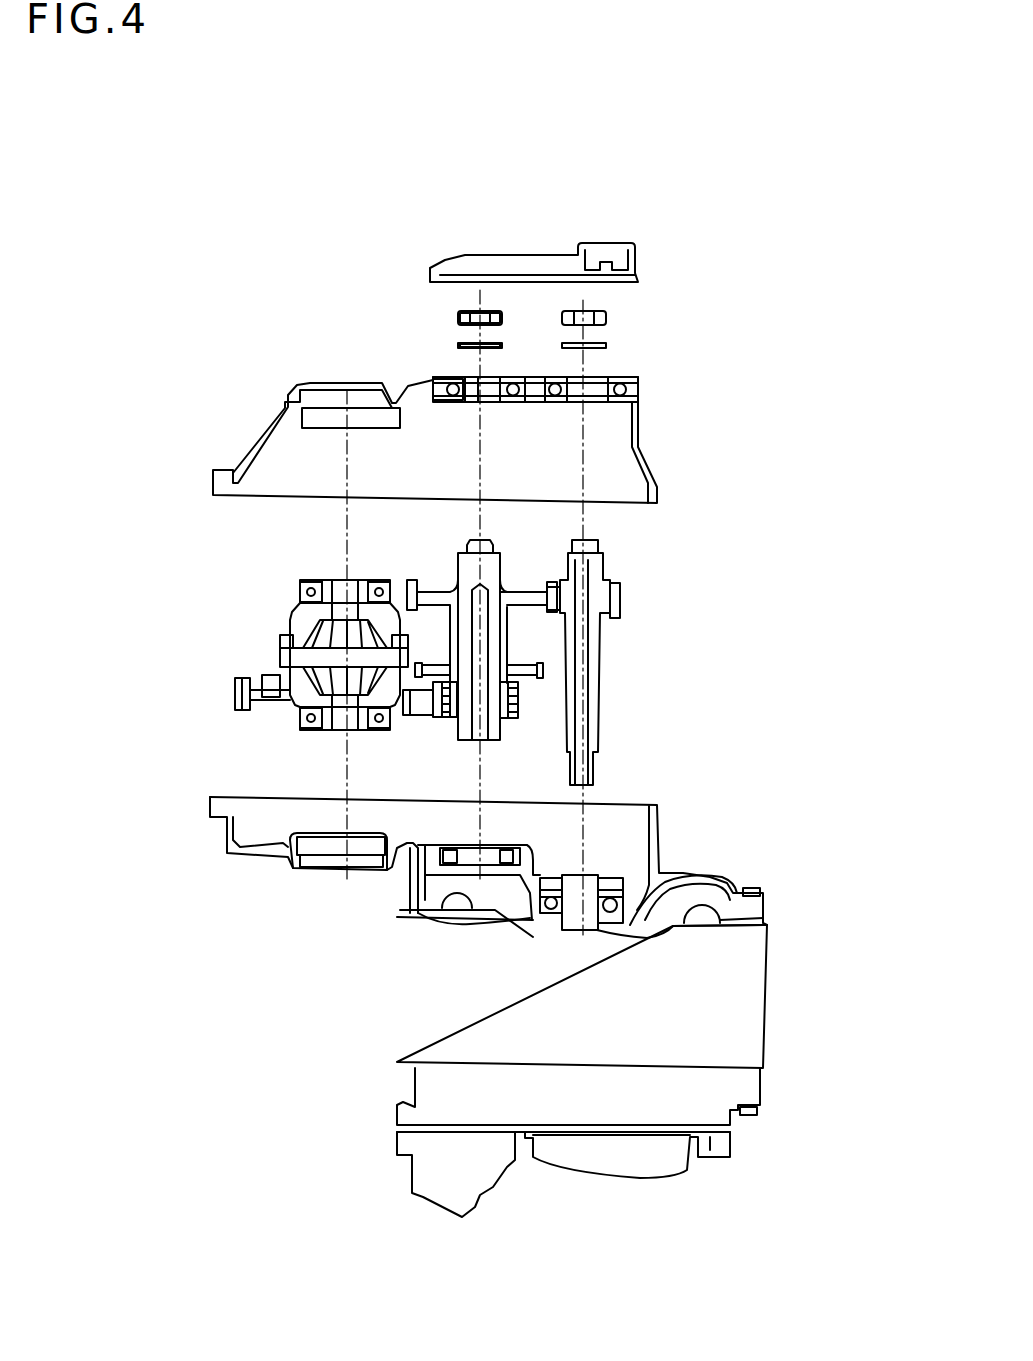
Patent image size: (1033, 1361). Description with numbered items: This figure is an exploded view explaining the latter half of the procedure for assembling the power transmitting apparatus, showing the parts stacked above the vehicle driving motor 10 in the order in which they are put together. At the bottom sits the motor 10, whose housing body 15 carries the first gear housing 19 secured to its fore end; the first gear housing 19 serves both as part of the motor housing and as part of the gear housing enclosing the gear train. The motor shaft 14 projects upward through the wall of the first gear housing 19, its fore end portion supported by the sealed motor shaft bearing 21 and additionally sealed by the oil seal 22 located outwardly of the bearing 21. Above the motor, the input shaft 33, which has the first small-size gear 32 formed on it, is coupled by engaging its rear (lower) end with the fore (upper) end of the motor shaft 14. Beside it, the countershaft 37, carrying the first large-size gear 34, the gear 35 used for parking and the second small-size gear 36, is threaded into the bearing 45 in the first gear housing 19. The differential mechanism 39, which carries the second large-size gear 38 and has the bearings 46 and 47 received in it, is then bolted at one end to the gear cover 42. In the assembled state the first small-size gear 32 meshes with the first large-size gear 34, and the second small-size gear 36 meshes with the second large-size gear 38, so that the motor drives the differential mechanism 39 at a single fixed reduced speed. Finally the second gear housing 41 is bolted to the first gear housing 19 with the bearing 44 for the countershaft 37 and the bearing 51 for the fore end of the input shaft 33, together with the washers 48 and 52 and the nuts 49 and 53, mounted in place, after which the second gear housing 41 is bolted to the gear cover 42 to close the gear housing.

The vehicle driving motor 10 is at (798, 998).
The motor shaft 14 is at (592, 875).
The housing body 15 is at (769, 958).
The first gear housing 19 is at (697, 873).
The sealed motor shaft bearing 21 is at (628, 913).
The oil seal 22 is at (608, 878).
The first small-size gear 32 is at (620, 600).
The input shaft 33 is at (603, 667).
The first large-size gear 34 is at (433, 593).
The gear to be used for parking 35 is at (540, 680).
The second small-size gear 36 is at (508, 720).
The countershaft 37 is at (453, 725).
The second large-size gear 38 is at (235, 693).
The differential mechanism 39 is at (313, 654).
The second gear housing 41 is at (645, 445).
The gear cover 42 is at (640, 255).
The bearing 44 is at (443, 383).
The bearing 45 is at (440, 860).
The bearing 46 is at (308, 585).
The bearing 47 is at (312, 728).
The washer 48 is at (458, 345).
The nut 49 is at (460, 318).
The bearing 51 is at (640, 380).
The washer 52 is at (606, 345).
The nut 53 is at (606, 318).